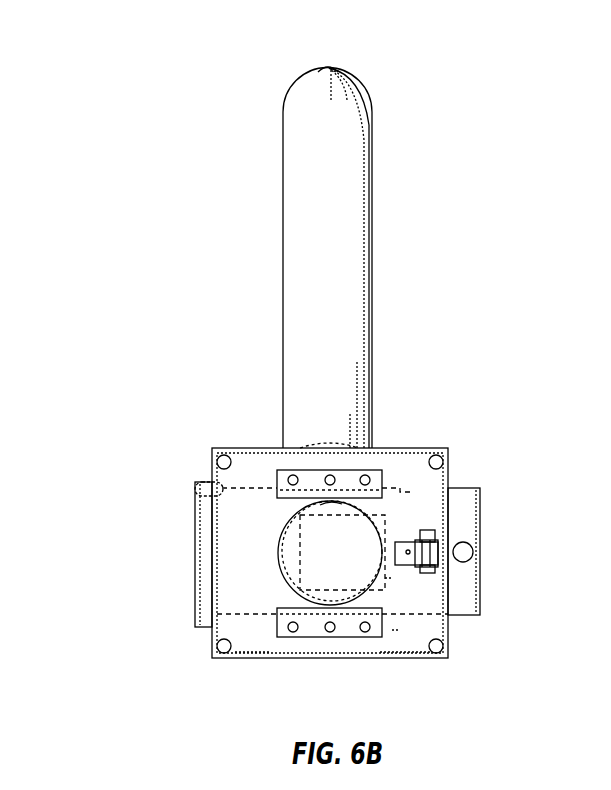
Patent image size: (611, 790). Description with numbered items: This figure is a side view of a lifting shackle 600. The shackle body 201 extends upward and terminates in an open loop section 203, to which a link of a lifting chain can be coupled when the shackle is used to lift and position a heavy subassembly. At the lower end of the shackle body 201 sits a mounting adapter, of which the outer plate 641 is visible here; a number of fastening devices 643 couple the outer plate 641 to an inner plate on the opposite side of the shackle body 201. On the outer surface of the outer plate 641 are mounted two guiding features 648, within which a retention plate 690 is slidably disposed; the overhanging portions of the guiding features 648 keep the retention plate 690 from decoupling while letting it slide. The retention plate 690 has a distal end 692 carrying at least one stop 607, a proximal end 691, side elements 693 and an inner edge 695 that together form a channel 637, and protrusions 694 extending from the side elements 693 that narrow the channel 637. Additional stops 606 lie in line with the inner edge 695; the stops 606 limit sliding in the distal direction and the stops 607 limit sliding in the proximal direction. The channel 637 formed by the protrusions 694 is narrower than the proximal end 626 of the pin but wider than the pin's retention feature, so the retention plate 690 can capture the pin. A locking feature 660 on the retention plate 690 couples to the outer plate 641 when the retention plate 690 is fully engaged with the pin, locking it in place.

The lifting shackle 600 is at (210, 71).
The shackle body 201 is at (323, 64).
The open loop section 203 is at (362, 178).
The stop 607 is at (205, 489).
The distal end 692 is at (200, 553).
The proximal end 626 is at (300, 566).
The channel 637 is at (265, 567).
The side element 693 is at (258, 490).
The protrusion 694 is at (342, 507).
The guiding feature 648 is at (375, 472).
The retention plate 690 is at (468, 486).
The proximal end 691 is at (460, 503).
The locking feature 660 is at (441, 534).
The inner edge 695 is at (390, 578).
The outer plate 641 is at (330, 648).
The stop 606 is at (396, 630).
The fastening device 643 is at (435, 650).